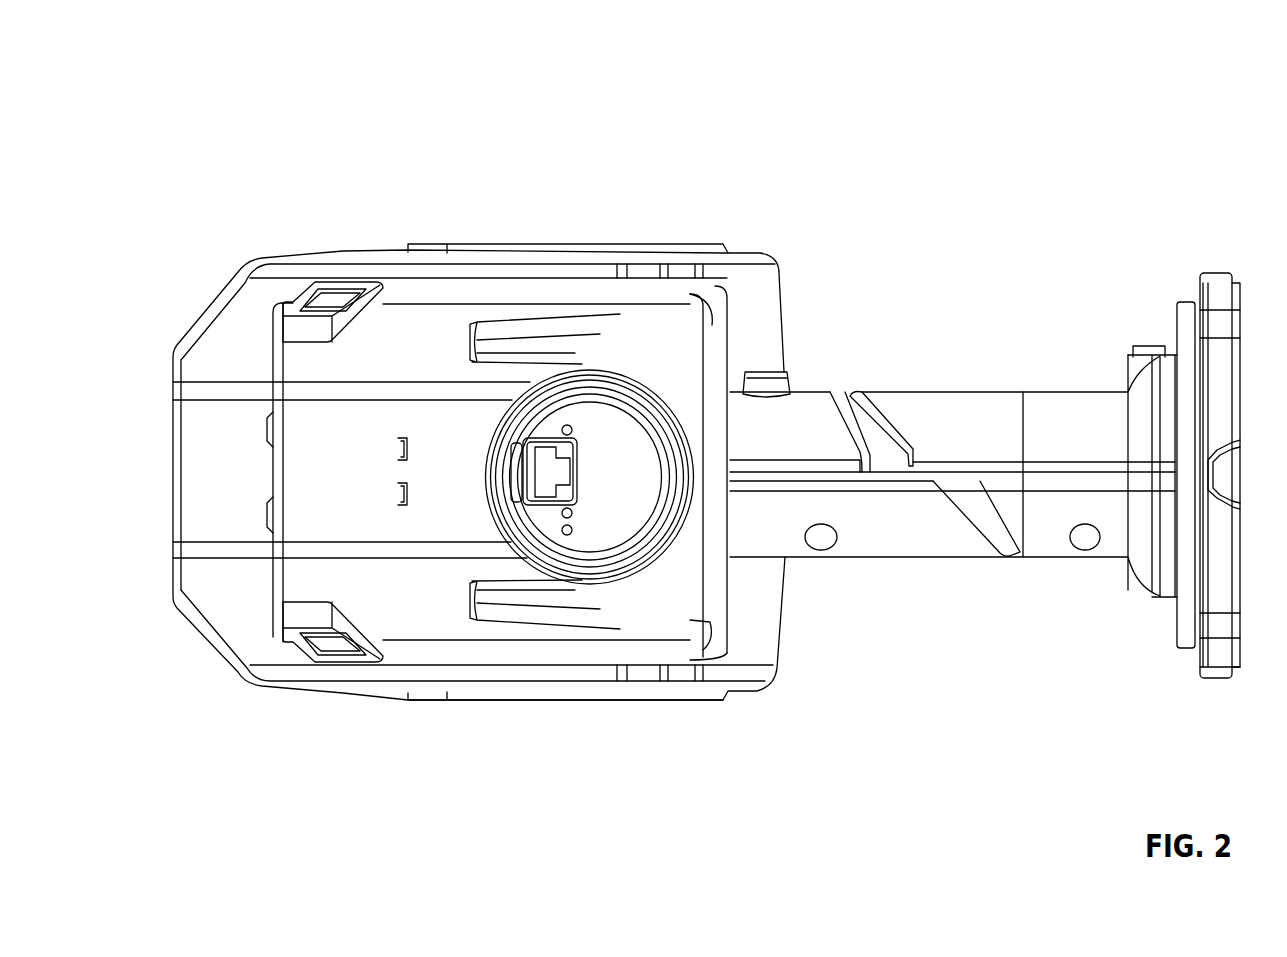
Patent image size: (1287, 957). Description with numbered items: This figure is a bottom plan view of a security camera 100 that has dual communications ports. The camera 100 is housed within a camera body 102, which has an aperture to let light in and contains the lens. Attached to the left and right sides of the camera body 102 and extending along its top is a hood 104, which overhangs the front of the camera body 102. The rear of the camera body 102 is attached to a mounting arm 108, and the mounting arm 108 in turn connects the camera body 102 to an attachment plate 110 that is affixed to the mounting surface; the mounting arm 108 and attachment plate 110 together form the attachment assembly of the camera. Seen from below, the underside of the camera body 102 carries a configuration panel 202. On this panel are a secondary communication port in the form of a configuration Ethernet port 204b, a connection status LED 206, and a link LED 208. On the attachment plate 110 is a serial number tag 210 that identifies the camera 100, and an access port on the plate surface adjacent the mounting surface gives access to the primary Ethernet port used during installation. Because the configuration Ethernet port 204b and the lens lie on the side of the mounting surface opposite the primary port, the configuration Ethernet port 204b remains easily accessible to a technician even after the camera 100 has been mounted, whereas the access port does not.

The security camera 100 is at (300, 106).
The camera body 102 is at (473, 293).
The hood 104 is at (279, 292).
The mounting arm 108 is at (975, 403).
The attachment plate 110 is at (1213, 328).
The configuration panel 202 is at (573, 413).
The configuration Ethernet port 204b is at (547, 480).
The connection status LED 206 is at (575, 513).
The link LED 208 is at (573, 431).
The serial number tag 210 is at (1242, 657).